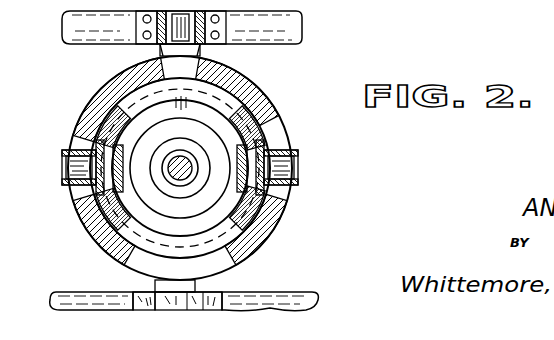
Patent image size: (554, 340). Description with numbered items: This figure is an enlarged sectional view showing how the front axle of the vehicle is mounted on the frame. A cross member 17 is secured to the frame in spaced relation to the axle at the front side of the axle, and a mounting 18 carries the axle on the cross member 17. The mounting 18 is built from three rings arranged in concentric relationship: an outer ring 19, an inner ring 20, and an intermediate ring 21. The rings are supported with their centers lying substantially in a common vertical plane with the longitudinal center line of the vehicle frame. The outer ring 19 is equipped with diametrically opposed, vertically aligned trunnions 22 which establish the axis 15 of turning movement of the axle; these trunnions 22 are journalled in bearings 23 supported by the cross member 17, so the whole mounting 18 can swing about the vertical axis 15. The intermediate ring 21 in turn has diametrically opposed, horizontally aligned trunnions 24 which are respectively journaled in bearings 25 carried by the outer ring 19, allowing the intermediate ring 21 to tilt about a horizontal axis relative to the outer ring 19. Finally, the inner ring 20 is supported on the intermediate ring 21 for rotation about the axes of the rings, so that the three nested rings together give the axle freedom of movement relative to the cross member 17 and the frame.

The axis 15 is at (183, 30).
The cross member 17 is at (293, 22).
The mounting 18 is at (310, 218).
The outer ring 19 is at (255, 95).
The inner ring 20 is at (195, 112).
The intermediate ring 21 is at (82, 126).
The trunnions 22 is at (216, 38).
The bearings 23 is at (128, 36).
The trunnions 24 is at (64, 168).
The bearings 25 is at (292, 148).